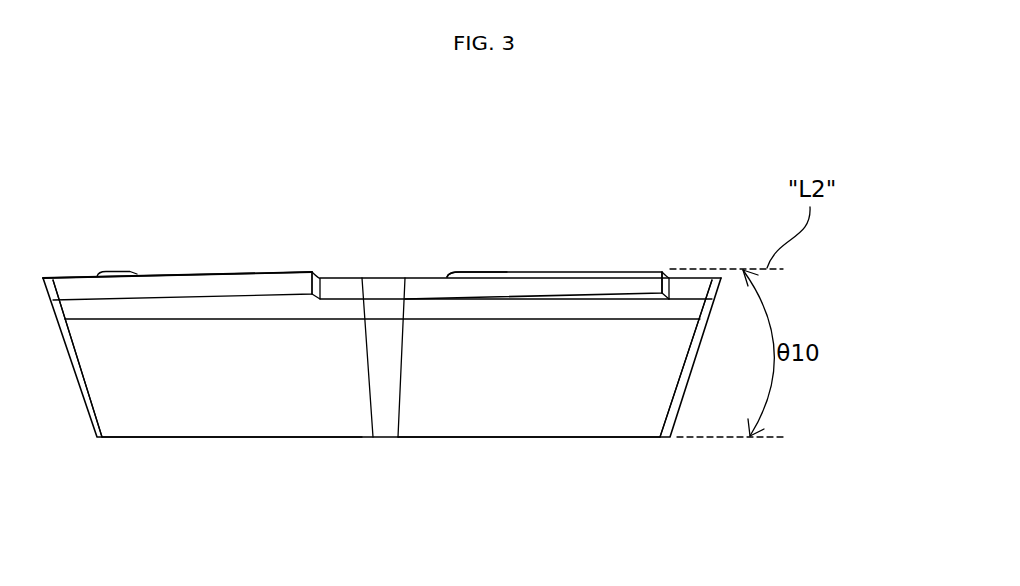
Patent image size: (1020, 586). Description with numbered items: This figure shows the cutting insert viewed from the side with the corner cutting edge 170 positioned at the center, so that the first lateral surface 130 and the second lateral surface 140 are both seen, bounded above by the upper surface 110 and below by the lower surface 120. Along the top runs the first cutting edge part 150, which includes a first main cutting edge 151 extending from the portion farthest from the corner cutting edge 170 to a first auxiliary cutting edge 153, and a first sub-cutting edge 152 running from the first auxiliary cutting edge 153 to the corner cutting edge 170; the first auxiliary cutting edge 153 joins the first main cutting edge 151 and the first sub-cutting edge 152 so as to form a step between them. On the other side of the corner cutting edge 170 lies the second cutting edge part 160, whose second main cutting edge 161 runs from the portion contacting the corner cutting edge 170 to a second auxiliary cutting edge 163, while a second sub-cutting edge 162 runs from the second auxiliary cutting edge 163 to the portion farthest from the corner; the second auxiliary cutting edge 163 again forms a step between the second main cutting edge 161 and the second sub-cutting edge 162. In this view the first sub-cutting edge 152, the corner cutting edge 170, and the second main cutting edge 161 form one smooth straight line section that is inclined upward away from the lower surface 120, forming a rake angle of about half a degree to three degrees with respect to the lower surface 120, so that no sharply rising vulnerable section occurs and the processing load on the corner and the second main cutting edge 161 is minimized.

The upper surface 110 is at (128, 269).
The lower surface 120 is at (138, 437).
The first lateral surface 130 is at (207, 405).
The second lateral surface 140 is at (558, 403).
The first cutting edge part 150 is at (178, 269).
The first main cutting edge 151 is at (255, 272).
The first sub-cutting edge 152 is at (318, 284).
The first auxiliary cutting edge 153 is at (318, 272).
The second cutting edge part 160 is at (585, 271).
The second main cutting edge 161 is at (507, 272).
The second sub-cutting edge 162 is at (684, 281).
The second auxiliary cutting edge 163 is at (670, 271).
The corner cutting edge 170 is at (390, 278).